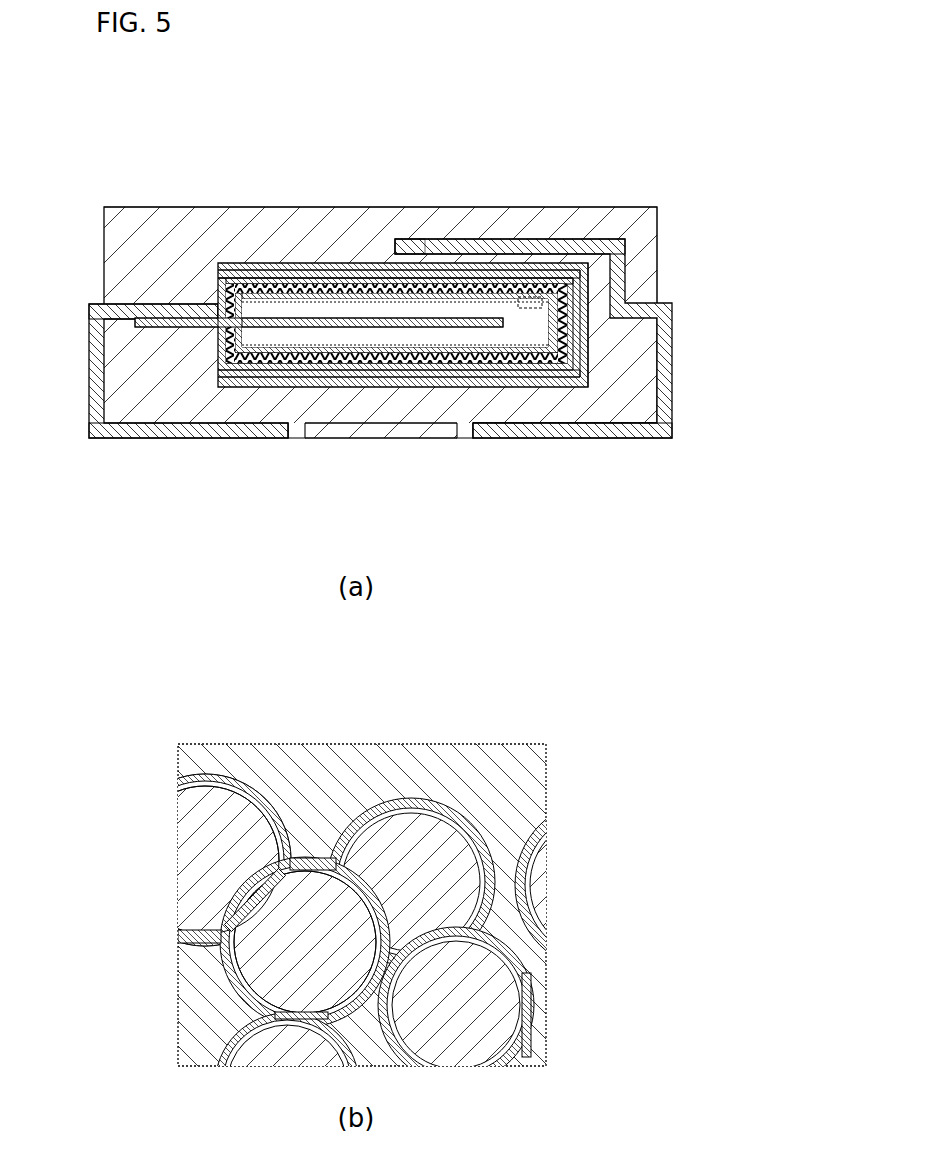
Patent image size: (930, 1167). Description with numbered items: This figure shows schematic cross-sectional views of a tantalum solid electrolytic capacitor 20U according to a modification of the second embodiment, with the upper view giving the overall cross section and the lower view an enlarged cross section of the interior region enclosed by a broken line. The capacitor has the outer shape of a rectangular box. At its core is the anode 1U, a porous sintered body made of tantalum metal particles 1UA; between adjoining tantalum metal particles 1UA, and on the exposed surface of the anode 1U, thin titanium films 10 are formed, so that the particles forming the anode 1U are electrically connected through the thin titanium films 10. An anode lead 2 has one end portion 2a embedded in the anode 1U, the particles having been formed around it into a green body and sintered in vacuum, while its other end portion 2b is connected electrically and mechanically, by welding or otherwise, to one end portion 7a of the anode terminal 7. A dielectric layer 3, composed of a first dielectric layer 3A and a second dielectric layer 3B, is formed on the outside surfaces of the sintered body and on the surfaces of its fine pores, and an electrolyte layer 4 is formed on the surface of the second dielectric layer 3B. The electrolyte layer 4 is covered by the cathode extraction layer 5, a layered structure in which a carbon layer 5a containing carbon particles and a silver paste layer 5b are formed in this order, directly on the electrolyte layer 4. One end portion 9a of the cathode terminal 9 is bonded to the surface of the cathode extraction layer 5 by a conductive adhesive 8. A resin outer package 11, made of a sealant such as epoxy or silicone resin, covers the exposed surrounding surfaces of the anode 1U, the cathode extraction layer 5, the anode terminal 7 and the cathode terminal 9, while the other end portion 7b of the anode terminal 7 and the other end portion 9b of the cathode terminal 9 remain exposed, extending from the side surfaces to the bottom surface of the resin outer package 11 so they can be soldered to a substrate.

The tantalum solid electrolytic capacitor 20U is at (625, 172).
The resin outer package 11 is at (104, 232).
The anode terminal 7 is at (89, 347).
The one end portion of the anode terminal 7a is at (130, 310).
The other end portion of the anode terminal 7b is at (205, 430).
The cathode terminal 9 is at (672, 330).
The one end portion of the cathode terminal 9a is at (483, 248).
The other end portion of the cathode terminal 9b is at (543, 430).
The conductive adhesive 8 is at (405, 253).
The cathode extraction layer 5 is at (217, 387).
The carbon layer 5a is at (250, 387).
The silver paste layer 5b is at (337, 380).
The dielectric layer 3 is at (256, 283).
The first dielectric layer 3A is at (287, 277).
The second dielectric layer 3B is at (342, 268).
The electrolyte layer 4 is at (370, 362).
The anode 1U is at (448, 347).
The tantalum metal particles 1UA is at (203, 862).
The thin titanium film 10 is at (248, 905).
The anode lead 2 is at (228, 300).
The one end portion of the anode lead 2a is at (420, 342).
The other end portion of the anode lead 2b is at (150, 318).